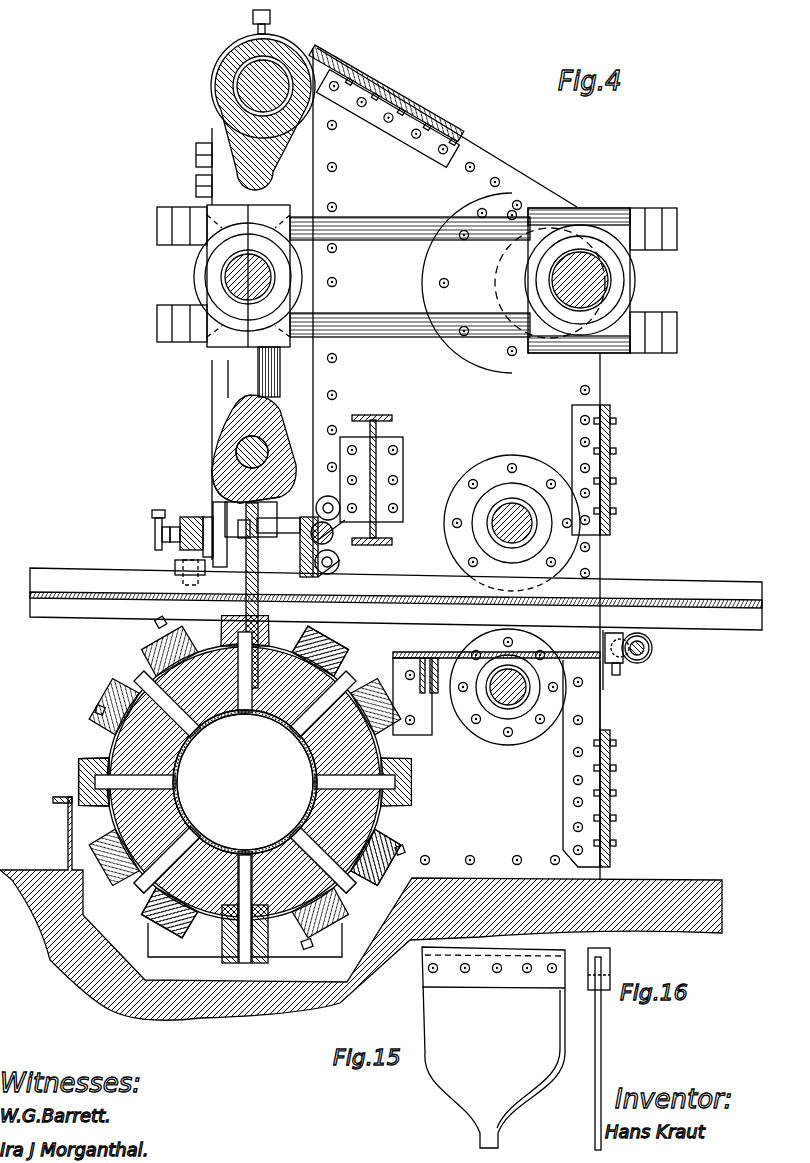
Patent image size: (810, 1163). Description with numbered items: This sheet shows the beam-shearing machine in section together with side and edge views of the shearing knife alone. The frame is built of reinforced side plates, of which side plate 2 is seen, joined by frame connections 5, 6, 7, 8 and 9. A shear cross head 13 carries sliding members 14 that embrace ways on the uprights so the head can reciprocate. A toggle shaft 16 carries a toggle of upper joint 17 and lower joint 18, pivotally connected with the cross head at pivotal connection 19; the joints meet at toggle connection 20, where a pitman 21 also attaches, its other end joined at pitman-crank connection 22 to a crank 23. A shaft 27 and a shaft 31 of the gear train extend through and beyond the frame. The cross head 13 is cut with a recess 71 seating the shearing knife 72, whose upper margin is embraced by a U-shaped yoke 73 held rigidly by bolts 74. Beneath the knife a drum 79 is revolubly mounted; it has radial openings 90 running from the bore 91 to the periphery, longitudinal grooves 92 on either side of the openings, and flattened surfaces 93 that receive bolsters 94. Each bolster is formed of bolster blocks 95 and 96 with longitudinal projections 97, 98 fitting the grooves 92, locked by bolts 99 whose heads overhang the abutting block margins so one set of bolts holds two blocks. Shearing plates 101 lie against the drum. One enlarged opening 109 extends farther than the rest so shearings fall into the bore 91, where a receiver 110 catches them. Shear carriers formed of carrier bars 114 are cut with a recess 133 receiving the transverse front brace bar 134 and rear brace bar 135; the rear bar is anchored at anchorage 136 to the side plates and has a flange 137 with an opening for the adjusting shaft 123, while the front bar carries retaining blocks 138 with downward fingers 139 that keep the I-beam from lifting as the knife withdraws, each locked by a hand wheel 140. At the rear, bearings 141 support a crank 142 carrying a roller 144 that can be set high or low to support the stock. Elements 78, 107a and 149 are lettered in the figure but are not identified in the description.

In FIG. 4, the side plate 2 is at (456, 464).
In FIG. 4, the frame connection 5 is at (410, 98).
In FIG. 4, the frame connection 6 is at (610, 480).
In FIG. 4, the frame connection 7 is at (382, 477).
In FIG. 4, the frame connection 8 is at (612, 808).
In FIG. 4, the frame connection 9 is at (66, 838).
In FIG. 4, the shear cross head 13 is at (214, 476).
In FIG. 4, the sliding member 14 is at (214, 418).
In FIG. 4, the toggle shaft 16 is at (237, 88).
In FIG. 4, the upper toggle joint 17 is at (256, 155).
In FIG. 4, the lower toggle joint 18 is at (250, 385).
In FIG. 4, the pivotal connection 19 is at (248, 452).
In FIG. 4, the toggle connection 20 is at (235, 272).
In FIG. 4, the pitman 21 is at (372, 262).
In FIG. 4, the pitman-crank connection 22 is at (608, 280).
In FIG. 4, the crank 23 is at (500, 257).
In FIG. 4, the shaft 27 is at (505, 518).
In FIG. 4, the shaft 31 is at (505, 702).
In FIG. 4, the recess 71 is at (245, 512).
In FIG. 4, the shearing knife 72 is at (185, 556).
In FIG. 4, the yoke 73 is at (203, 522).
In FIG. 15, the yoke 73 is at (487, 980).
In FIG. 16, the yoke 73 is at (612, 958).
In FIG. 4, the bolt 74 is at (275, 556).
In FIG. 4, the shaft 78 is at (670, 602).
In FIG. 4, the drum 79 is at (267, 705).
In FIG. 4, the radial opening 90 is at (300, 730).
In FIG. 4, the bore 91 is at (245, 782).
In FIG. 4, the longitudinal groove 92 is at (245, 782).
In FIG. 4, the flattened surface 93 is at (98, 742).
In FIG. 4, the bolster 94 is at (85, 772).
In FIG. 4, the bolster block 95 is at (150, 633).
In FIG. 4, the bolster block 96 is at (135, 668).
In FIG. 4, the longitudinal projection 97 is at (208, 860).
In FIG. 4, the longitudinal projection 98 is at (323, 856).
In FIG. 4, the locking bolt 99 is at (97, 710).
In FIG. 4, the shearing plate 101 is at (396, 655).
In FIG. 4, the lug 107a is at (380, 868).
In FIG. 4, the enlarged opening 109 is at (245, 782).
In FIG. 4, the receiver 110 is at (245, 782).
In FIG. 4, the carrier bar 114 is at (187, 574).
In FIG. 4, the shaft 123 is at (377, 500).
In FIG. 4, the recess 133 is at (316, 572).
In FIG. 4, the front brace bar 134 is at (178, 546).
In FIG. 4, the rear brace bar 135 is at (340, 560).
In FIG. 4, the anchorage 136 is at (326, 503).
In FIG. 4, the flange 137 is at (392, 541).
In FIG. 4, the retaining block 138 is at (155, 512).
In FIG. 4, the finger 139 is at (200, 583).
In FIG. 4, the hand wheel 140 is at (160, 532).
In FIG. 4, the bearing 141 is at (605, 683).
In FIG. 4, the crank 142 is at (616, 672).
In FIG. 4, the roller 144 is at (653, 652).
In FIG. 4, the strip 149 is at (432, 660).